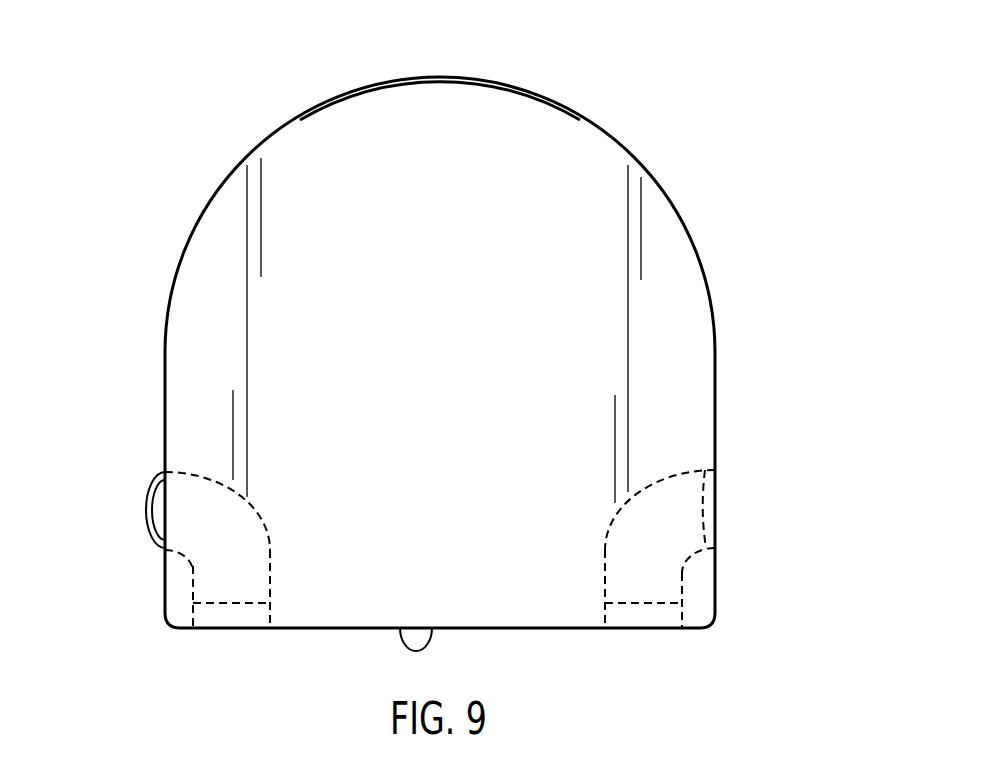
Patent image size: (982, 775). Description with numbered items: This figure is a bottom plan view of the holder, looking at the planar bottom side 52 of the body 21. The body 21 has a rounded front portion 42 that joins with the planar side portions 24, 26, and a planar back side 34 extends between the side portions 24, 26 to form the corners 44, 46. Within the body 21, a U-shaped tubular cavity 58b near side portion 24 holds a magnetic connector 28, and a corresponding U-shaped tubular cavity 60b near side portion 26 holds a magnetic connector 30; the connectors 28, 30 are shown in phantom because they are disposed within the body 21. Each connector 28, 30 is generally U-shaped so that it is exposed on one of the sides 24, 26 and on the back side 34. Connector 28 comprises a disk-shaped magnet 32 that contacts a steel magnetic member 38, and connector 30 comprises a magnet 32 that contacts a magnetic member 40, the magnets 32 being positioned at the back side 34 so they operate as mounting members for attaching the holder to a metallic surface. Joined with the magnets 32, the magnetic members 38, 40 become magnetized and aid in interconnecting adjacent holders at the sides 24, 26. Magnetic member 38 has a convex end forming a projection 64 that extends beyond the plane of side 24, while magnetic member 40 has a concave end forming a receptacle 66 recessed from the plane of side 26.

The body 21 is at (178, 270).
The rounded front portion 42 is at (325, 103).
The side portion 24 is at (163, 408).
The side portion 26 is at (715, 402).
The corner 44 is at (168, 622).
The corner 46 is at (710, 620).
The back side 34 is at (400, 628).
The bottom side 52 is at (456, 356).
The projection 64 is at (147, 509).
The receptacle 66 is at (707, 503).
The cavity 58b is at (262, 500).
The cavity 60b is at (615, 522).
The magnetic connector 28 is at (272, 533).
The magnetic connector 30 is at (608, 540).
The magnet 32 is at (225, 612).
The magnetic member 38 is at (222, 540).
The magnetic member 40 is at (653, 543).